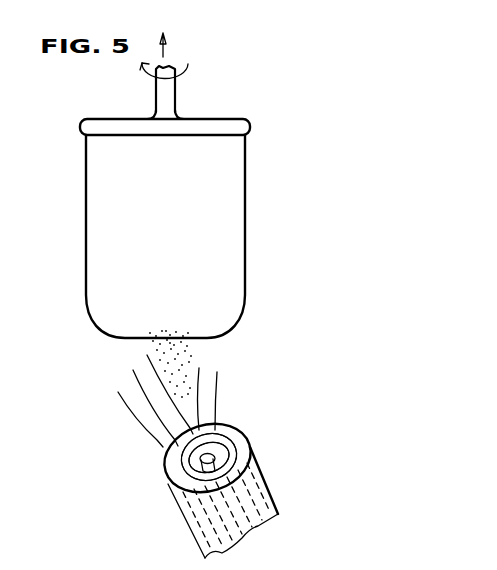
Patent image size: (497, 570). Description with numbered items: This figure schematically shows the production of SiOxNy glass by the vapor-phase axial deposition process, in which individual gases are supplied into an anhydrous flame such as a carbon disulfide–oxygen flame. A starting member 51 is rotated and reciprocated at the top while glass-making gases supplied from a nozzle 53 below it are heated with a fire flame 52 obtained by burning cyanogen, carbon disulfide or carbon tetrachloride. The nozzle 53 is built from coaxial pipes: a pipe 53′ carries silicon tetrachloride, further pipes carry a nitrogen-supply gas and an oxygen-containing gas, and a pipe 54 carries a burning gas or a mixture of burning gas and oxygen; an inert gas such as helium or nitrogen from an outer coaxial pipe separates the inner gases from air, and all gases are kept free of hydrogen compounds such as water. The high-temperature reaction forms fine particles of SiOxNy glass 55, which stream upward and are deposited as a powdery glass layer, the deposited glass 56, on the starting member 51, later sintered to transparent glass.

The starting member 51 is at (163, 102).
The deposited glass 56 is at (224, 259).
The fine particles of SiOxNy glass 55 is at (172, 360).
The fire flame 52 is at (197, 418).
The starting gas supplying pipe 53 is at (330, 427).
The pipe 53′ is at (242, 437).
The pipe 54 is at (173, 500).